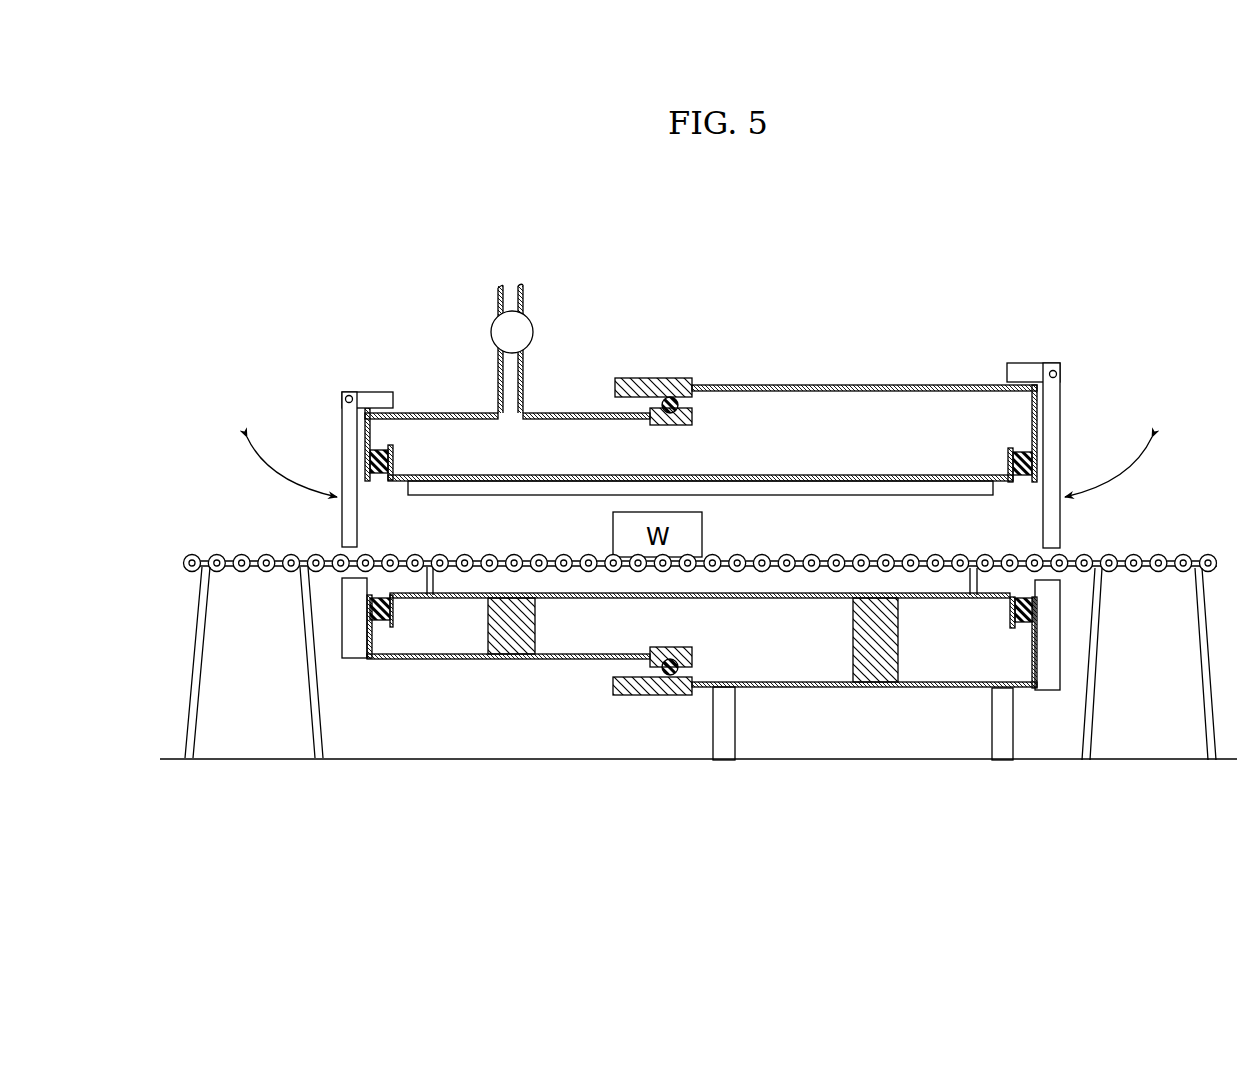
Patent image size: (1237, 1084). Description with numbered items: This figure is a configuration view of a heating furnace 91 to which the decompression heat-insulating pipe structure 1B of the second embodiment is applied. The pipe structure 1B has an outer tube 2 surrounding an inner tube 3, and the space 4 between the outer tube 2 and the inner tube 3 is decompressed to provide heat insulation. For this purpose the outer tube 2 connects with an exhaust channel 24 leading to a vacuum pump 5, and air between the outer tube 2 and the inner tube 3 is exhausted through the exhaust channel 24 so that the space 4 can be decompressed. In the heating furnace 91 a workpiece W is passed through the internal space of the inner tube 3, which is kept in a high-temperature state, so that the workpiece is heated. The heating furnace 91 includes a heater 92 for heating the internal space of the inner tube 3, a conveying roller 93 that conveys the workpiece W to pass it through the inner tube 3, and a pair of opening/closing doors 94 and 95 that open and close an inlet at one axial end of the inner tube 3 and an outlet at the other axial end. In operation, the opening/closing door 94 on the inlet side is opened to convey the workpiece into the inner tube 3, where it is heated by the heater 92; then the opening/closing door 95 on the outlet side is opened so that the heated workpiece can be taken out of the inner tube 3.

The decompression heat-insulating pipe structure 1B is at (853, 326).
The outer tube 2 is at (757, 385).
The inner tube 3 is at (798, 478).
The space 4 is at (845, 435).
The vacuum pump 5 is at (492, 331).
The exhaust channel 24 is at (507, 380).
The heating furnace 91 is at (1007, 245).
The heater 92 is at (833, 488).
The conveying roller 93 is at (1183, 555).
The opening/closing door 94 is at (1060, 530).
The opening/closing door 95 is at (343, 530).